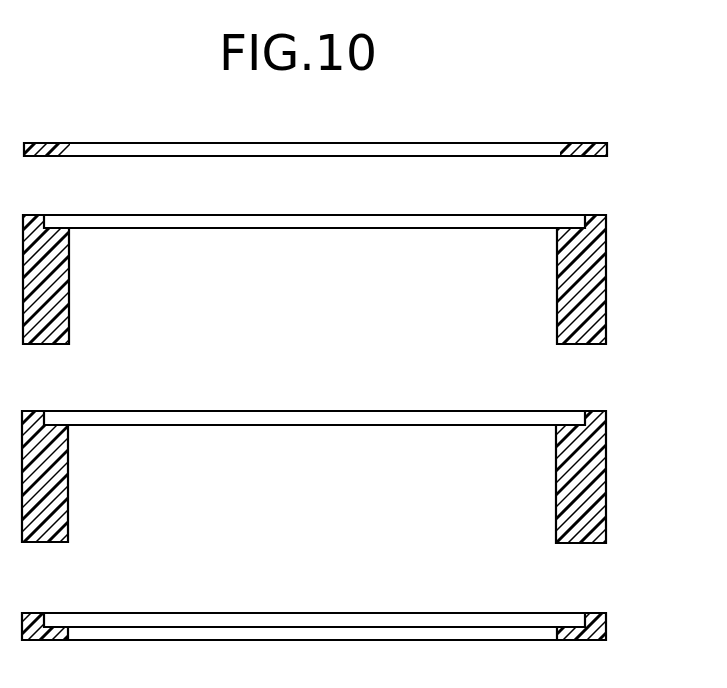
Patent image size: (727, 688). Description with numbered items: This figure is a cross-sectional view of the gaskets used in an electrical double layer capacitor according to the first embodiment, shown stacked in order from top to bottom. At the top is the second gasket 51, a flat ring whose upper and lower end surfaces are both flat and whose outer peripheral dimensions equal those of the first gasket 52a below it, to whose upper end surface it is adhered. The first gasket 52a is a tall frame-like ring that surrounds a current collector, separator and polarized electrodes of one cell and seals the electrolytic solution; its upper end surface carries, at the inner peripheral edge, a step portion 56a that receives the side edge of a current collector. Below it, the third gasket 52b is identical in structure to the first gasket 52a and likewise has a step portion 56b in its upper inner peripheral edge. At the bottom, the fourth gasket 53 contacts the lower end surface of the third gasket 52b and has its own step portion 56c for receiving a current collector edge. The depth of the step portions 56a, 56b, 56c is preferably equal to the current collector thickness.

The second gasket 51 is at (608, 150).
The first gasket 52a is at (592, 271).
The step portion 56a is at (565, 229).
The third gasket 52b is at (592, 488).
The step portion 56b is at (565, 428).
The fourth gasket 53 is at (607, 621).
The step portion 56c is at (565, 629).